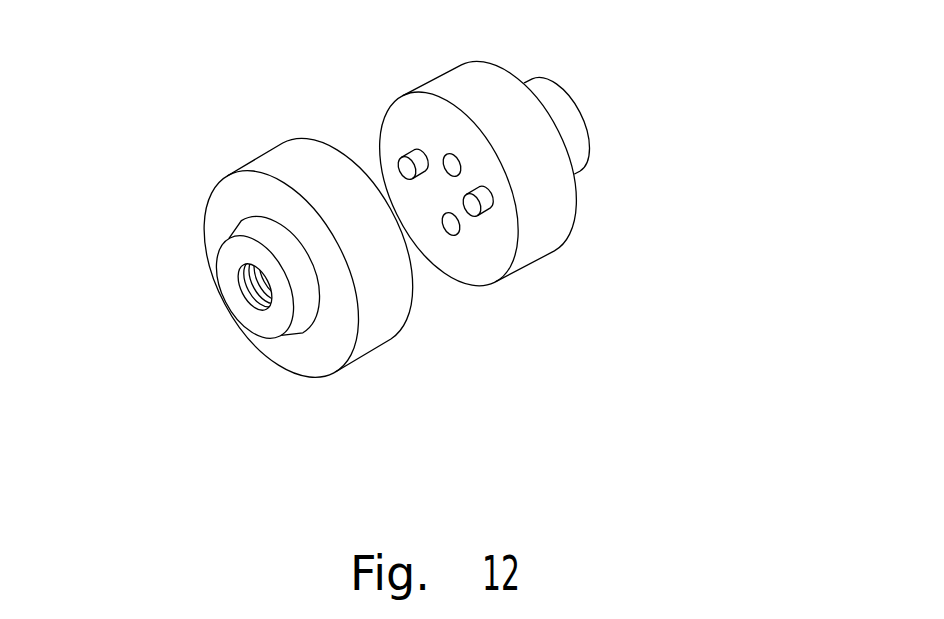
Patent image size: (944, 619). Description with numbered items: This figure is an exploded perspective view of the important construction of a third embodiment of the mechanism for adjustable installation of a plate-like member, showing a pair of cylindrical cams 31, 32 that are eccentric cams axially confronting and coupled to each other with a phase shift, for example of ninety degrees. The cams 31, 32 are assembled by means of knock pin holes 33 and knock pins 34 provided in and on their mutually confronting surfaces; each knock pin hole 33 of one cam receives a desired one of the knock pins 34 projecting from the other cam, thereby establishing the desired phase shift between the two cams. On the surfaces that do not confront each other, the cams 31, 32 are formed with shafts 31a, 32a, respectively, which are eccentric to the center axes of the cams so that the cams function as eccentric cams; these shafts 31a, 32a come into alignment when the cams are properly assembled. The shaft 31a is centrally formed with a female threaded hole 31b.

The cylindrical cam 31 is at (325, 348).
The shaft 31a is at (270, 322).
The female threaded hole 31b is at (240, 287).
The cylindrical cam 32 is at (538, 245).
The shaft 32a is at (575, 127).
The knock pin hole 33 is at (452, 157).
The knock pin 34 is at (413, 153).